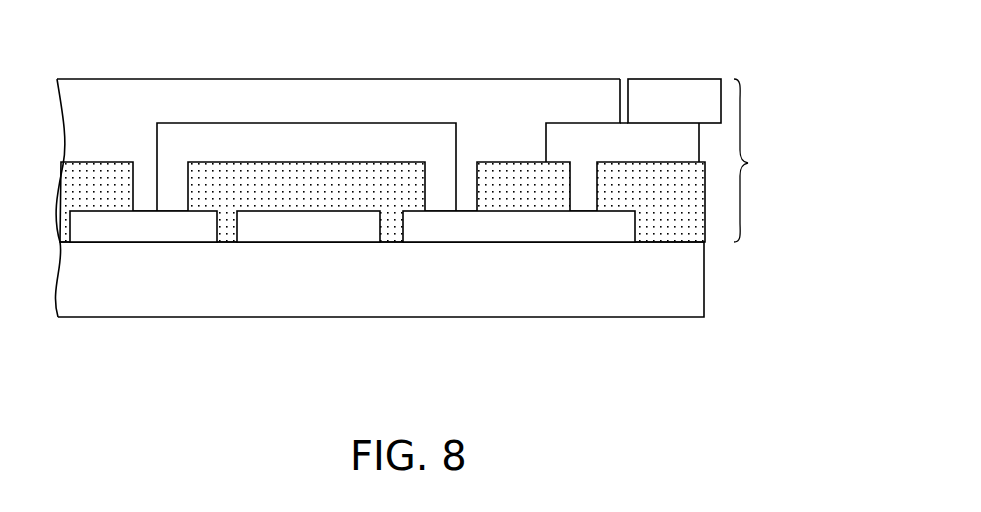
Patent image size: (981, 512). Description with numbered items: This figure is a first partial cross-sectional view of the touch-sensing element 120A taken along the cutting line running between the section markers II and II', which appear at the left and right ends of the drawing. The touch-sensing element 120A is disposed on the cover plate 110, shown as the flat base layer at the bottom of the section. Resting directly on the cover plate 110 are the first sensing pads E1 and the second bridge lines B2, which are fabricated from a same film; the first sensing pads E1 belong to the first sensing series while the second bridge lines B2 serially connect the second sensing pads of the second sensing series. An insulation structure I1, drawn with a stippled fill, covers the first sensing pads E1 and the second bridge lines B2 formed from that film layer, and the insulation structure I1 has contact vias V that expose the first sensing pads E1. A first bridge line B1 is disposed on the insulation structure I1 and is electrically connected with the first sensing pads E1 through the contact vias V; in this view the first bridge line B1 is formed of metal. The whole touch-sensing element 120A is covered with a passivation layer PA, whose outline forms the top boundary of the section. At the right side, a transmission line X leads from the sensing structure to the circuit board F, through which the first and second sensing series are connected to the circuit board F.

The cover plate 110 is at (694, 278).
The touch-sensing element 120A is at (768, 160).
The first sensing pad E1 is at (145, 230).
The second bridge line B2 is at (305, 232).
The insulation structure I1 is at (390, 193).
The first bridge line B1 is at (302, 137).
The contact via V is at (144, 188).
The passivation layer PA is at (515, 95).
The transmission line X is at (583, 150).
The circuit board F is at (666, 98).
The cutting line II-II' II is at (60, 54).
The cutting line II- II' is at (723, 54).